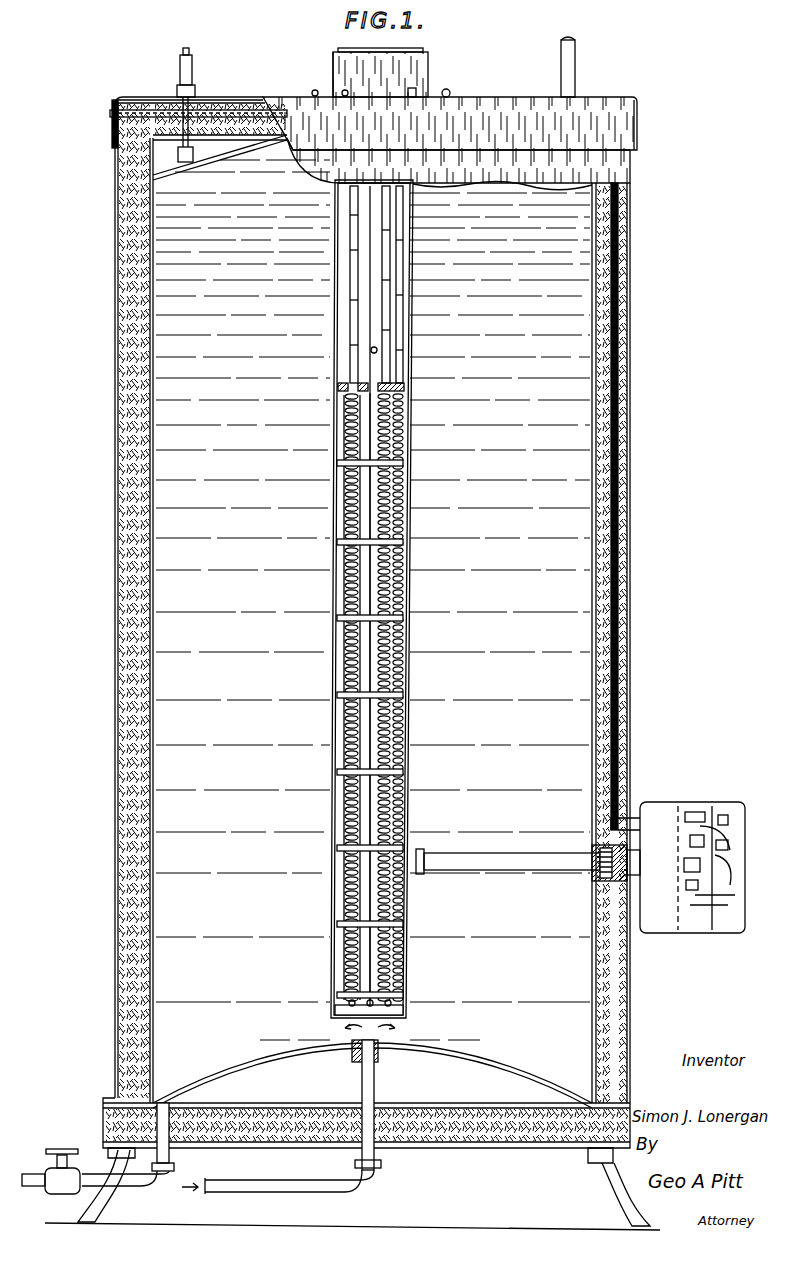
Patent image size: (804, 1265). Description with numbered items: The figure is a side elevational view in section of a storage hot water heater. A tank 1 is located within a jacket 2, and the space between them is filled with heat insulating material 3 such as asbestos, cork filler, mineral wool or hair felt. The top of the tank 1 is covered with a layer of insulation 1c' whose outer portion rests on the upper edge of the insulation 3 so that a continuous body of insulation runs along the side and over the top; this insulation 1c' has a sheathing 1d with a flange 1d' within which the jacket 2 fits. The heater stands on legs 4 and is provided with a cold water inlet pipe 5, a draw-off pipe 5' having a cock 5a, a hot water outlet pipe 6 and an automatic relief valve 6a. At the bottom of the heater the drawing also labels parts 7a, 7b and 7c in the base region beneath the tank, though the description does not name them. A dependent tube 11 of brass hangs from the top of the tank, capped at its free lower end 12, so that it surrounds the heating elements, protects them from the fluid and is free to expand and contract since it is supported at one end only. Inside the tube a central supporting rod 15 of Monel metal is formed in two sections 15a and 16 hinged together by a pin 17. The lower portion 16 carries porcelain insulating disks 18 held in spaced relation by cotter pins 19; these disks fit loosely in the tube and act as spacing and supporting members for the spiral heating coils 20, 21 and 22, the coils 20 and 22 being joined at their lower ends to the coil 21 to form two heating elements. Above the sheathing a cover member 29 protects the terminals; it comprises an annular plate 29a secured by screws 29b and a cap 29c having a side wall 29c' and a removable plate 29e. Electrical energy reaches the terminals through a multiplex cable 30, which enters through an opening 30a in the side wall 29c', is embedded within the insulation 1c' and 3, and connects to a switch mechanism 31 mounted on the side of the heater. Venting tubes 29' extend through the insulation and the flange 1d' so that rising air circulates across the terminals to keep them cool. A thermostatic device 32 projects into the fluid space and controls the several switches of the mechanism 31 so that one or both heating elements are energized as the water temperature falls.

The tank 1 is at (615, 525).
The layer of insulation 1c' is at (432, 127).
The sheathing 1d is at (190, 83).
The flange 1d' is at (95, 131).
The jacket 2 is at (630, 561).
The heat insulating material 3 is at (133, 650).
The legs 4 is at (108, 1205).
The cold water inlet pipe 5 is at (281, 1117).
The draw-off pipe 5' is at (141, 1144).
The cock 5a is at (60, 1176).
The hot water outlet pipe 6 is at (575, 74).
The automatic relief valve 6a is at (192, 72).
The bottom casing 7a is at (366, 1138).
The bottom plate 7b is at (497, 1150).
The tank bottom 7c is at (438, 1112).
The dependent tube 11 is at (408, 730).
The free lower end 12 is at (334, 1018).
The central supporting member or rod 15 is at (370, 296).
The rod section 15a is at (370, 318).
The lower portion of the supporting rod 16 is at (372, 490).
The pin 17 is at (377, 350).
The porcelain insulating disks 18 is at (405, 463).
The cotter pins 19 is at (368, 548).
The spiral heating coil 20 is at (350, 436).
The spiral heating coil 21 is at (380, 437).
The spiral heating coil 22 is at (400, 440).
The cover member 29 is at (458, 91).
The venting tubes 29' is at (174, 101).
The annular plate 29a is at (315, 90).
The screws 29b is at (346, 90).
The cap 29c is at (399, 72).
The side wall 29c' is at (447, 82).
The plate 29e is at (348, 50).
The multiplex cable 30 is at (618, 415).
The opening 30a is at (632, 808).
The switch mechanism 31 is at (707, 867).
The thermostatic device 32 is at (528, 854).